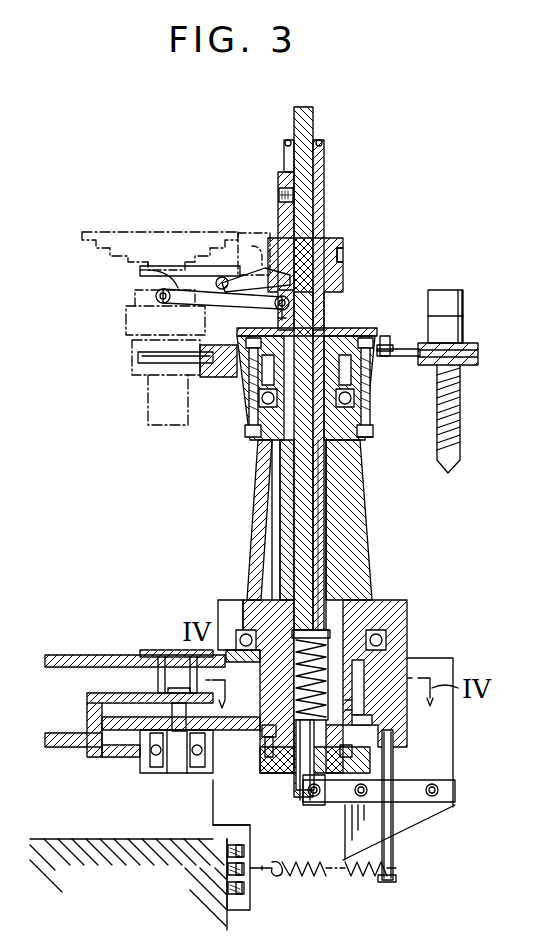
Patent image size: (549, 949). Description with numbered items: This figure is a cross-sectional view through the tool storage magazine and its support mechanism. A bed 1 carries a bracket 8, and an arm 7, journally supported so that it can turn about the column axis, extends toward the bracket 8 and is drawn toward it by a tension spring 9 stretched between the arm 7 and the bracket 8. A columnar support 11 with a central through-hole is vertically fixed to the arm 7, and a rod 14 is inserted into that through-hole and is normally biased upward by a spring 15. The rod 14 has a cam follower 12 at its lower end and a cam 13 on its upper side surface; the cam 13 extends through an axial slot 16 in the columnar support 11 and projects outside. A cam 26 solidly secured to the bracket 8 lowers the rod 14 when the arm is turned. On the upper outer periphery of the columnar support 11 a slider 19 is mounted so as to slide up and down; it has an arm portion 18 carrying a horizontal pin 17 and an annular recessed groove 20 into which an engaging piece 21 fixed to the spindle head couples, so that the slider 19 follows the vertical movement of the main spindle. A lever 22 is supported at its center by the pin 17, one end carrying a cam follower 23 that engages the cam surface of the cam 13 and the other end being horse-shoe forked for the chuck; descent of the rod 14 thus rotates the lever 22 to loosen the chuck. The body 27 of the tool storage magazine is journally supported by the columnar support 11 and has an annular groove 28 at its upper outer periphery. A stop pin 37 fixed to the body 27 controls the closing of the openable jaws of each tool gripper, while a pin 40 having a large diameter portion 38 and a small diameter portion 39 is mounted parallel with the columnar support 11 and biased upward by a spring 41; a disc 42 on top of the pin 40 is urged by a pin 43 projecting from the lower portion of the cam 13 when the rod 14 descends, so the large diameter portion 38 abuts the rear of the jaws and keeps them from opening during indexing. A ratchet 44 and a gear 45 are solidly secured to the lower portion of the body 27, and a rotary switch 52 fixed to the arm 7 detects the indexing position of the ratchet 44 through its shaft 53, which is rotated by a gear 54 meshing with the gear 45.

The bed 1 is at (140, 838).
The arm 7 is at (85, 660).
The bracket 8 is at (262, 840).
The tension spring 9 is at (352, 880).
The columnar support 11 is at (286, 522).
The cam follower 12 is at (303, 800).
The cam 13 is at (284, 178).
The rod 14 is at (326, 520).
The spring 15 is at (340, 600).
The slot 16 is at (252, 400).
The horizontal pin 17 is at (210, 268).
The arm portion 18 is at (222, 272).
The slider 19 is at (335, 250).
The annular recessed groove 20 is at (344, 256).
The engaging piece 21 is at (248, 236).
The lever 22 is at (165, 285).
The cam follower 23 is at (276, 306).
The cam 26 is at (418, 800).
The body of tool storage magazine 27 is at (262, 500).
The annular groove 28 is at (250, 375).
The stop pin 37 is at (190, 368).
The large diameter portion 38 is at (386, 336).
The small diameter portion 39 is at (400, 325).
The pin 40 is at (372, 380).
The spring 41 is at (372, 432).
The disc 42 is at (345, 330).
The pin 43 is at (232, 318).
The ratchet 44 is at (392, 660).
The gear 45 is at (375, 720).
The rotary switch 52 is at (172, 658).
The shaft 53 is at (178, 705).
The gear 54 is at (130, 712).